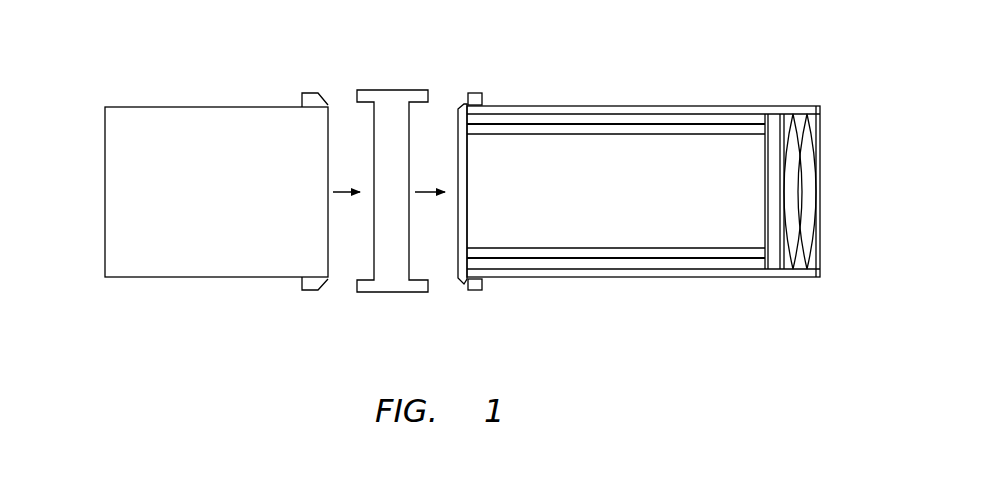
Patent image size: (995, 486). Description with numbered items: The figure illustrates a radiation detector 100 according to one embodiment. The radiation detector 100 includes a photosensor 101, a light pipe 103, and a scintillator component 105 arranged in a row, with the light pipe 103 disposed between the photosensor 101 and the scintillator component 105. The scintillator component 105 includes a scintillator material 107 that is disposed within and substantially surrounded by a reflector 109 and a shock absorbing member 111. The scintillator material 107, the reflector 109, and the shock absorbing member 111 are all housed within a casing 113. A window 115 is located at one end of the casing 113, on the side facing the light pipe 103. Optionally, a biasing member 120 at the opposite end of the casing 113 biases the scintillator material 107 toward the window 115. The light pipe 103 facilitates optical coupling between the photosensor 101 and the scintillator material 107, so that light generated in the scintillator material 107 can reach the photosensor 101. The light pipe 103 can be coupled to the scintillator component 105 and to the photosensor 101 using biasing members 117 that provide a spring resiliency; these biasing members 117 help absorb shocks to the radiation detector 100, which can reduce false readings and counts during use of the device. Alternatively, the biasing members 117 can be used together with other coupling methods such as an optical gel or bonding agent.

The radiation detector 100 is at (114, 47).
The photosensor 101 is at (170, 279).
The light pipe 103 is at (387, 293).
The scintillator component 105 is at (684, 306).
The scintillator material 107 is at (616, 191).
The reflector 109 is at (704, 130).
The shock absorbing member 111 is at (617, 118).
The casing 113 is at (549, 105).
The window 115 is at (457, 118).
The biasing members 117 is at (307, 92).
The biasing member 120 is at (808, 258).